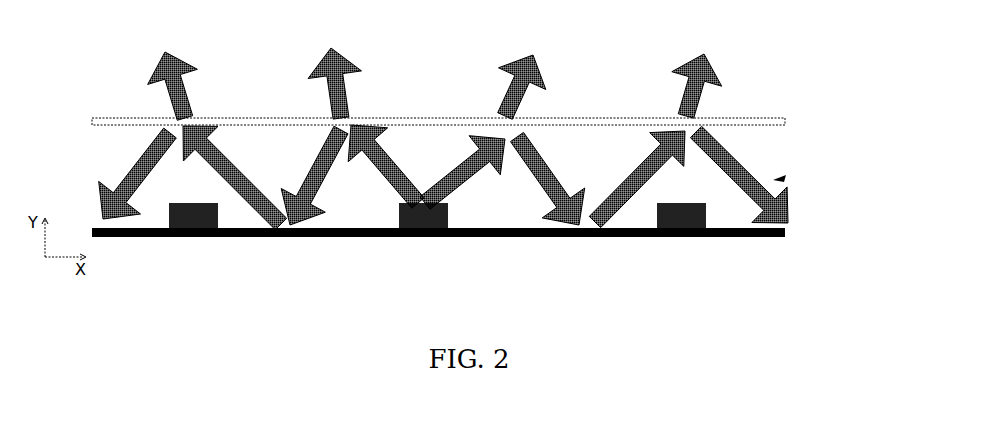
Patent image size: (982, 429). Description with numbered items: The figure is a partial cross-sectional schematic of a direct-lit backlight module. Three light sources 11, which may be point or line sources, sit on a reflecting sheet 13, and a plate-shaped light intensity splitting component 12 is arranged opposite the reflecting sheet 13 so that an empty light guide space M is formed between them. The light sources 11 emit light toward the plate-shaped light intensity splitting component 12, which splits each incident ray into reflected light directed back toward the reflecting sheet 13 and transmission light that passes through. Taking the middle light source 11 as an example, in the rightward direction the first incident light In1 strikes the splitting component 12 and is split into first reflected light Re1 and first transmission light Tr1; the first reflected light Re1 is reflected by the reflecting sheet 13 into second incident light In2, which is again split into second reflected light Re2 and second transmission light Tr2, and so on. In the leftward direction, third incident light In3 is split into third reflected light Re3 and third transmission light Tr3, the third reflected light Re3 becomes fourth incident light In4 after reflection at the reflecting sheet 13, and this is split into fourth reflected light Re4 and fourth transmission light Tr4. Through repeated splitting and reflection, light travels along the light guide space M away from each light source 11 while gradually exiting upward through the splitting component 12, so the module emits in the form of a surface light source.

The light sources 11 is at (167, 219).
The plate-shaped light intensity splitting component 12 is at (767, 117).
The reflecting sheet 13 is at (767, 235).
The light guide space M is at (784, 178).
The first incident light In1 is at (462, 173).
The second incident light In2 is at (637, 179).
The third incident light In3 is at (386, 166).
The fourth incident light In4 is at (235, 178).
The first reflected light Re1 is at (548, 178).
The second reflected light Re2 is at (739, 174).
The third reflected light Re3 is at (314, 175).
The fourth reflected light Re4 is at (138, 173).
The first transmission light Tr1 is at (522, 87).
The second transmission light Tr2 is at (697, 86).
The third transmission light Tr3 is at (334, 83).
The fourth transmission light Tr4 is at (173, 86).